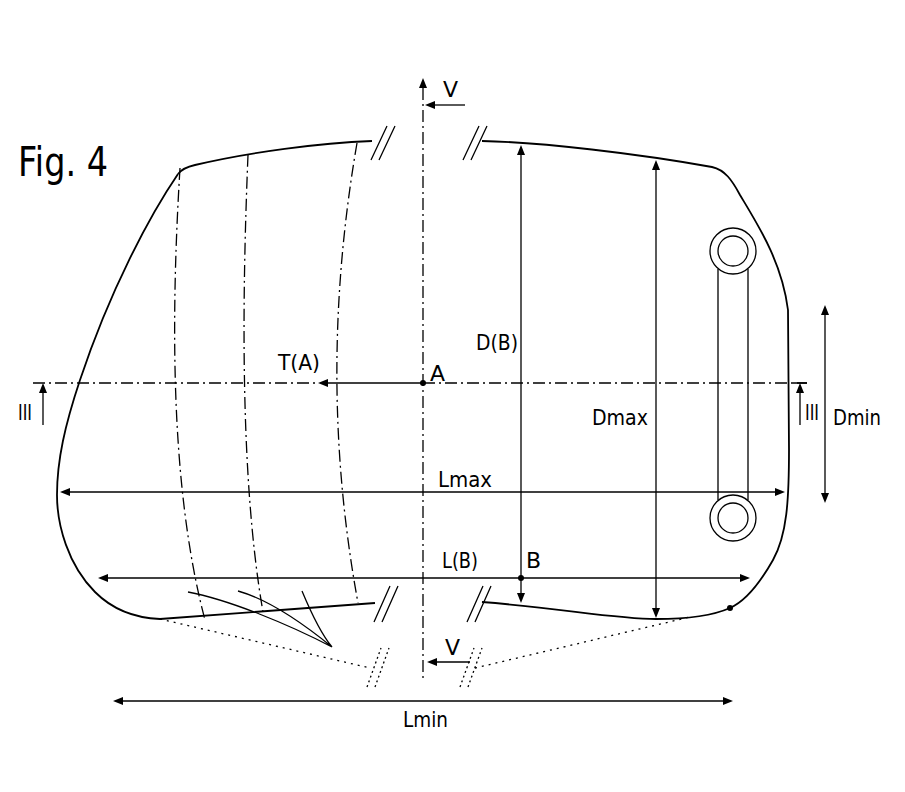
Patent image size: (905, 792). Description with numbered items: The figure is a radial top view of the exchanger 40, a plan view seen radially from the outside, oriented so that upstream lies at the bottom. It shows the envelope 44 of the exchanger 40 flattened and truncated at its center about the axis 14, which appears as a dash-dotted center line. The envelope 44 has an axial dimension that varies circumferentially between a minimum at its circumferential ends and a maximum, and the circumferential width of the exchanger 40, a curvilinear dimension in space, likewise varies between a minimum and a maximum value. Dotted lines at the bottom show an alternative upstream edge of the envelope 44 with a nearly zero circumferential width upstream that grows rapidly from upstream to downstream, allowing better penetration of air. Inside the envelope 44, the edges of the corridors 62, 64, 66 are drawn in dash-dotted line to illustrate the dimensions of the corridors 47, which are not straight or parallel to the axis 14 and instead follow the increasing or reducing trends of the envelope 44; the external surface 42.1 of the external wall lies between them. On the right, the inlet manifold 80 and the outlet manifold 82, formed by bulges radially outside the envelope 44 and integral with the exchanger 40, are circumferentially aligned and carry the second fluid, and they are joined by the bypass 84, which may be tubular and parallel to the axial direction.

The axis 14 is at (421, 127).
The exchanger 40 is at (668, 136).
The envelope 44 is at (222, 136).
The external surface 42.1 is at (305, 244).
The corridor edge 62 is at (172, 302).
The corridor edge 64 is at (240, 302).
The corridor edge 66 is at (338, 307).
The corridors 47 is at (274, 623).
The inlet manifold 80 is at (733, 518).
The outlet manifold 82 is at (733, 251).
The bypass 84 is at (743, 340).